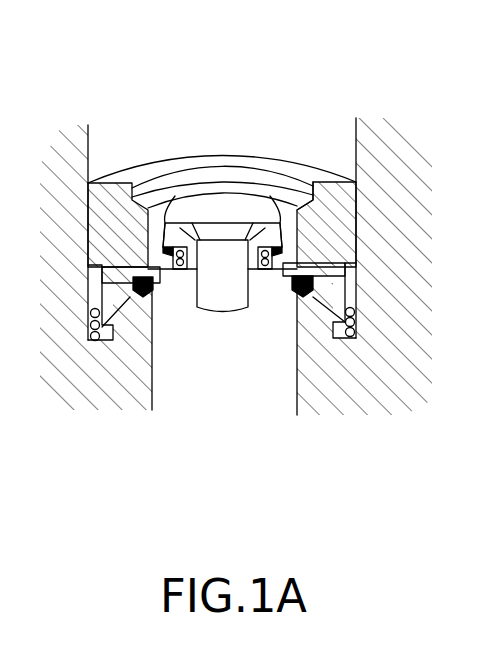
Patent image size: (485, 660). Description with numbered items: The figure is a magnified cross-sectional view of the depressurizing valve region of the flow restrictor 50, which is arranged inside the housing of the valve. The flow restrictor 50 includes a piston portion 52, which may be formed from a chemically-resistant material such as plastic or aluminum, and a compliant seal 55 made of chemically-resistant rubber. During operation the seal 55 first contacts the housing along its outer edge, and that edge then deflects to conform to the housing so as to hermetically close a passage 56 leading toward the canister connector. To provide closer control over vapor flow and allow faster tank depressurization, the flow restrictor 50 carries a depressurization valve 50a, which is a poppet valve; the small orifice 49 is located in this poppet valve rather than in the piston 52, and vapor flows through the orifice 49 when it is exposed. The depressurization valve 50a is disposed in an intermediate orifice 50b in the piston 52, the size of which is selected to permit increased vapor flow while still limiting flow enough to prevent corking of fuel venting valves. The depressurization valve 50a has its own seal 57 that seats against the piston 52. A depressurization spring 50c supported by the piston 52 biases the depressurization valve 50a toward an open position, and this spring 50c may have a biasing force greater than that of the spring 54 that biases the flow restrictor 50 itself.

The small orifice 49 is at (228, 252).
The flow restrictor 50 is at (160, 148).
The depressurization valve 50a is at (296, 198).
The intermediate orifice 50b is at (140, 280).
The depressurization spring 50c is at (258, 270).
The piston portion 52 is at (356, 266).
The spring 54 is at (88, 338).
The compliant seal 55 is at (135, 285).
The passage 56 is at (305, 128).
The seal 57 is at (170, 235).